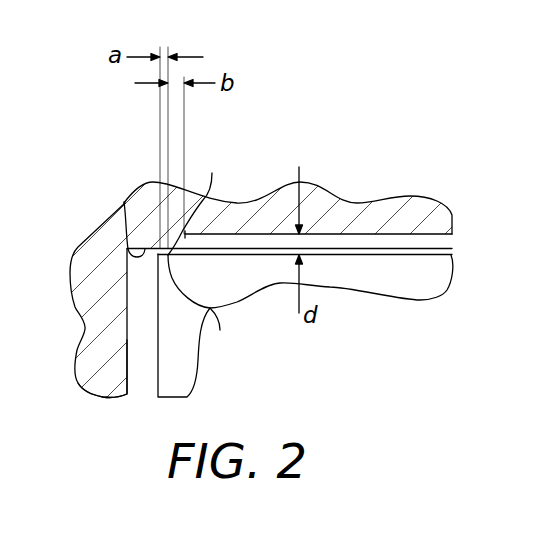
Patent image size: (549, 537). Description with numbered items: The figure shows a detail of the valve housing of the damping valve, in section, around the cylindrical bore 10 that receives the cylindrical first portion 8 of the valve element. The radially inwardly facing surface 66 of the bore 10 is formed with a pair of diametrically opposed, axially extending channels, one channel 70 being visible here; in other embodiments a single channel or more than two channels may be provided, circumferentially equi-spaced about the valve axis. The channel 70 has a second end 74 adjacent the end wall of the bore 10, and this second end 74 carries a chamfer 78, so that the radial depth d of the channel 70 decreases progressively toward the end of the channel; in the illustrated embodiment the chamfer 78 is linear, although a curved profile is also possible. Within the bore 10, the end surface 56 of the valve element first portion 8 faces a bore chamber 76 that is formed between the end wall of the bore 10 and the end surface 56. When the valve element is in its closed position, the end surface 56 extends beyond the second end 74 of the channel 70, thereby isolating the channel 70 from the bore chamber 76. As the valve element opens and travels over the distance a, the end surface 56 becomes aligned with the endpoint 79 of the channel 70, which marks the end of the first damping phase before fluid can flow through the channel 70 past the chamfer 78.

The cylindrical bore 10 is at (407, 231).
The radially inwardly facing surface 66 is at (124, 202).
The channel 70 is at (362, 240).
The second end 74 is at (200, 202).
The bore chamber 76 is at (138, 267).
The end surface 56 is at (157, 340).
The chamfer 78 is at (185, 235).
The endpoint 79 is at (220, 330).
The cylindrical first portion 8 is at (182, 377).